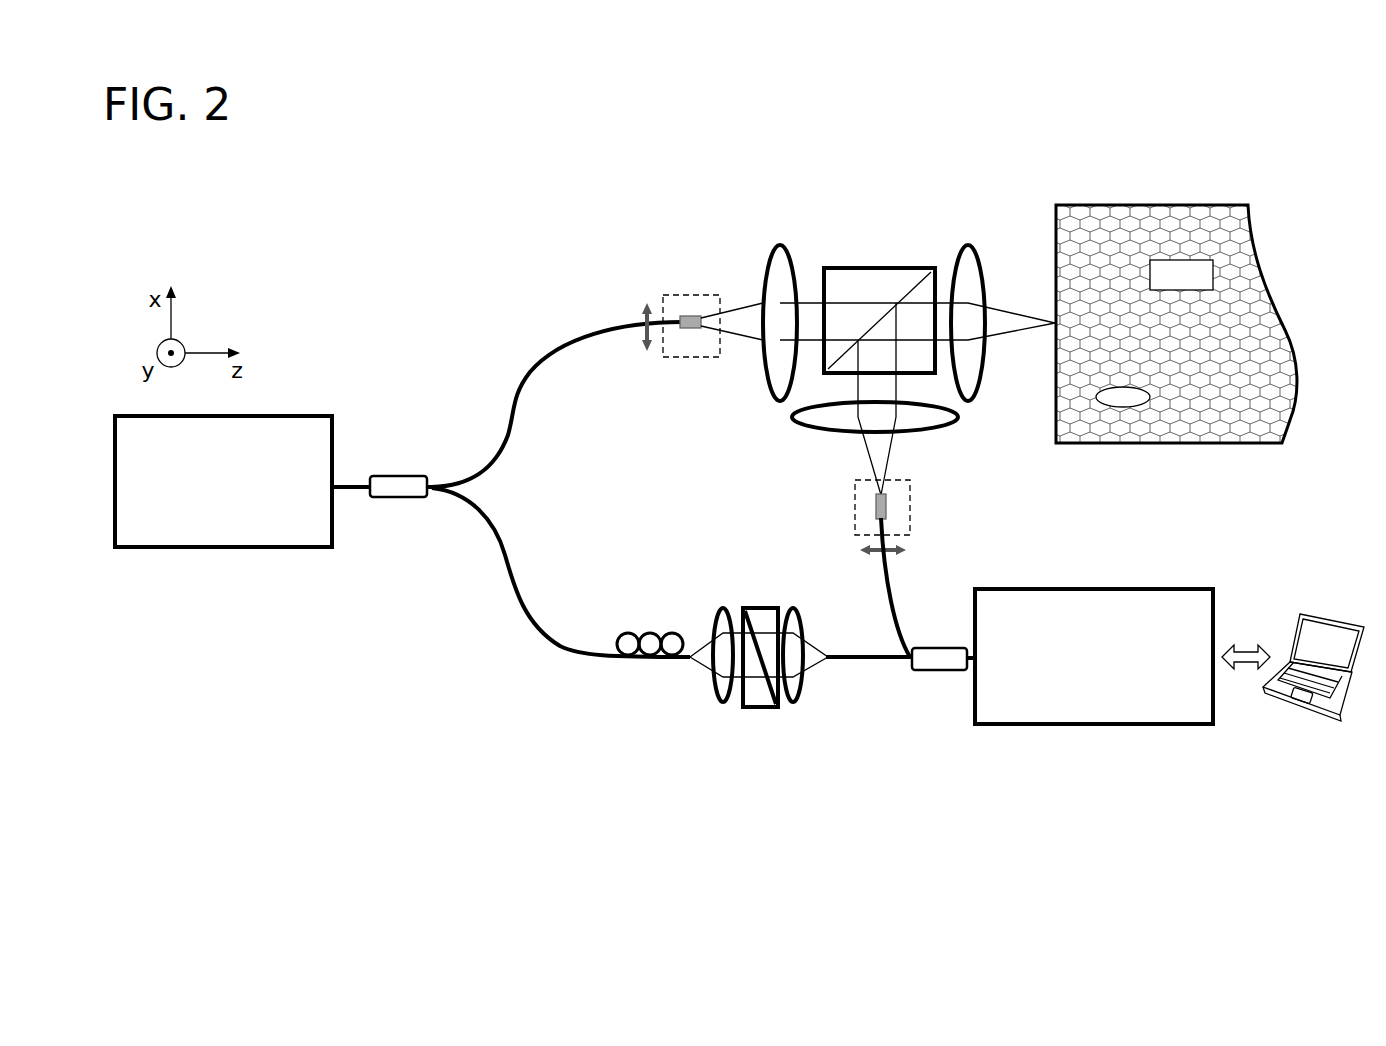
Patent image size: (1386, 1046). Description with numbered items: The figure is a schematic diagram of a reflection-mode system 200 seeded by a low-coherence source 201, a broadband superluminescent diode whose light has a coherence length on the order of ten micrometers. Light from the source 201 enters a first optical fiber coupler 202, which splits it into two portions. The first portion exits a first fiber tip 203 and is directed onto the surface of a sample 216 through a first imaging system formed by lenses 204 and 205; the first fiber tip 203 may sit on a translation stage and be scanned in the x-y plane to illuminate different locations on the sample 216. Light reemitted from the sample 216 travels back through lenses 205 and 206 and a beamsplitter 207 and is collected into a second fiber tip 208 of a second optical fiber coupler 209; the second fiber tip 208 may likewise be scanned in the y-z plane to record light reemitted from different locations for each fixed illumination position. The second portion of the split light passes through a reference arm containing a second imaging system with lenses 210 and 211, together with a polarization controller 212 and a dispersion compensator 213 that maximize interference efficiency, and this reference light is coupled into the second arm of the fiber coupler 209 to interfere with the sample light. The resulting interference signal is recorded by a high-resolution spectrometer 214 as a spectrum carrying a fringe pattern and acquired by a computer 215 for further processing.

The system 200 is at (258, 212).
The low-coherence source 201 is at (245, 550).
The first optical fiber coupler 202 is at (396, 498).
The first fiber tip 203 is at (676, 295).
The lens 204 is at (779, 246).
The lens 205 is at (967, 246).
The lens 206 is at (796, 418).
The beamsplitter 207 is at (878, 268).
The second fiber tip 208 is at (855, 505).
The second optical fiber coupler 209 is at (938, 672).
The lens 210 is at (720, 705).
The lens 211 is at (796, 705).
The polarization controller 212 is at (652, 657).
The dispersion compensator 213 is at (757, 708).
The spectrometer 214 is at (1125, 726).
The computer 215 is at (1290, 700).
The sample 216 is at (1226, 434).